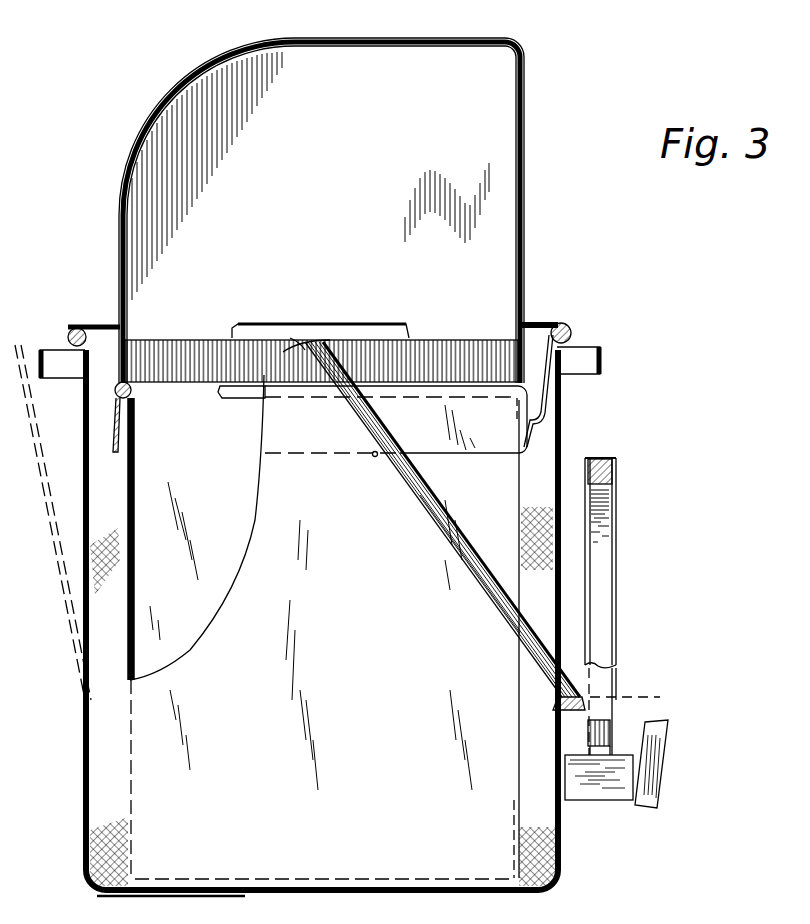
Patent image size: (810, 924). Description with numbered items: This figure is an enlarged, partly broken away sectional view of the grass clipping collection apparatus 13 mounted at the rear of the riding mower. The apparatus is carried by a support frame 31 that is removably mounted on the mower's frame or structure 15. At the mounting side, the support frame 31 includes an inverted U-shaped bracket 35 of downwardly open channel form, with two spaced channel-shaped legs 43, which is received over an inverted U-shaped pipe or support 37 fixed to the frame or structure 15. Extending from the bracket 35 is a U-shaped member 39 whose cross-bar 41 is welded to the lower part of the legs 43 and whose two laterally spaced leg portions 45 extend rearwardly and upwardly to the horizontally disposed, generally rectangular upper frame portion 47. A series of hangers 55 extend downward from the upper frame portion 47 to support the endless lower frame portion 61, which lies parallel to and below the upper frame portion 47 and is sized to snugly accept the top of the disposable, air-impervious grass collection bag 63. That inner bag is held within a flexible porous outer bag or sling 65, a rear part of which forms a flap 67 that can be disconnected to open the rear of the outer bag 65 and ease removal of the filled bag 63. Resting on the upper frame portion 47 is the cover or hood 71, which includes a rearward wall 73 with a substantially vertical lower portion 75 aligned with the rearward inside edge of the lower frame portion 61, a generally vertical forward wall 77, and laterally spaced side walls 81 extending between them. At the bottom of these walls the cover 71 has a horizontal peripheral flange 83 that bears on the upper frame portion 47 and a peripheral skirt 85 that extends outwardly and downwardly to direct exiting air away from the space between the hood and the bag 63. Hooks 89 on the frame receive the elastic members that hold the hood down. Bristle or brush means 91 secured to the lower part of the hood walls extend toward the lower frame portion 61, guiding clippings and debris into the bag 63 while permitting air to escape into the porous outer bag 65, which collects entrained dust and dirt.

The grass clipping collection apparatus 13 is at (300, 768).
The frame or structure 15 is at (598, 787).
The support frame 31 is at (478, 590).
The bracket 35 is at (626, 546).
The pipe or support 37 is at (605, 500).
The U-shaped member 39 is at (432, 546).
The cross-bar 41 is at (640, 698).
The legs 43 is at (607, 683).
The leg portions 45 is at (420, 500).
The upper frame portion 47 is at (68, 327).
The hangers 55 is at (543, 390).
The lower frame portion 61 is at (240, 396).
The grass collection bag 63 is at (137, 776).
The outer bag or sling 65 is at (87, 630).
The flap 67 is at (55, 565).
The cover or hood 71 is at (178, 92).
The rearward wall 73 is at (125, 184).
The lower portion 75 is at (128, 243).
The forward wall 77 is at (522, 122).
The side walls 81 is at (345, 164).
The peripheral flange 83 is at (102, 323).
The peripheral skirt 85 is at (43, 350).
The hooks 89 is at (373, 458).
The bristle or brush means 91 is at (125, 356).